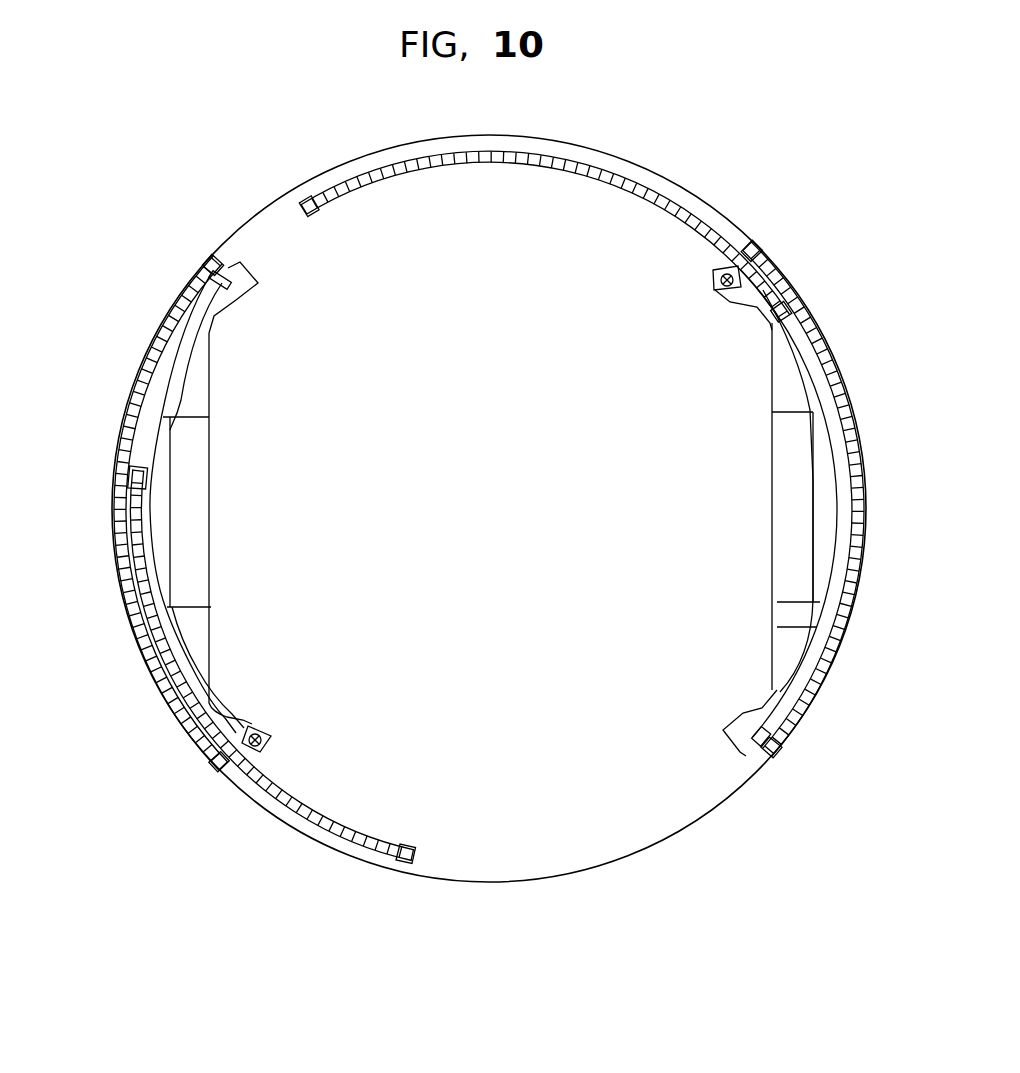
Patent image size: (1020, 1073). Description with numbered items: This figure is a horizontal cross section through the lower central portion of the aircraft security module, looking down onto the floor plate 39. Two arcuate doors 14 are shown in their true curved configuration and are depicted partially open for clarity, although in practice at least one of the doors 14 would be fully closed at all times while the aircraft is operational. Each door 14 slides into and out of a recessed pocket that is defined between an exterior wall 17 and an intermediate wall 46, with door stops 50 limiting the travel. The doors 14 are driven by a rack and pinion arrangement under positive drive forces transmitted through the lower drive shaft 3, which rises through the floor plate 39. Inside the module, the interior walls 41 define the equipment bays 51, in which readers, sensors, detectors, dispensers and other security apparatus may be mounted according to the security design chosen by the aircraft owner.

The lower drive shaft 3 is at (257, 734).
The doors 14 is at (549, 166).
The exterior walls 17 is at (152, 340).
The floor plate 39 is at (594, 868).
The interior walls 41 is at (214, 654).
The intermediate walls 46 is at (176, 367).
The door stops 50 is at (745, 745).
The equipment bays 51 is at (186, 500).